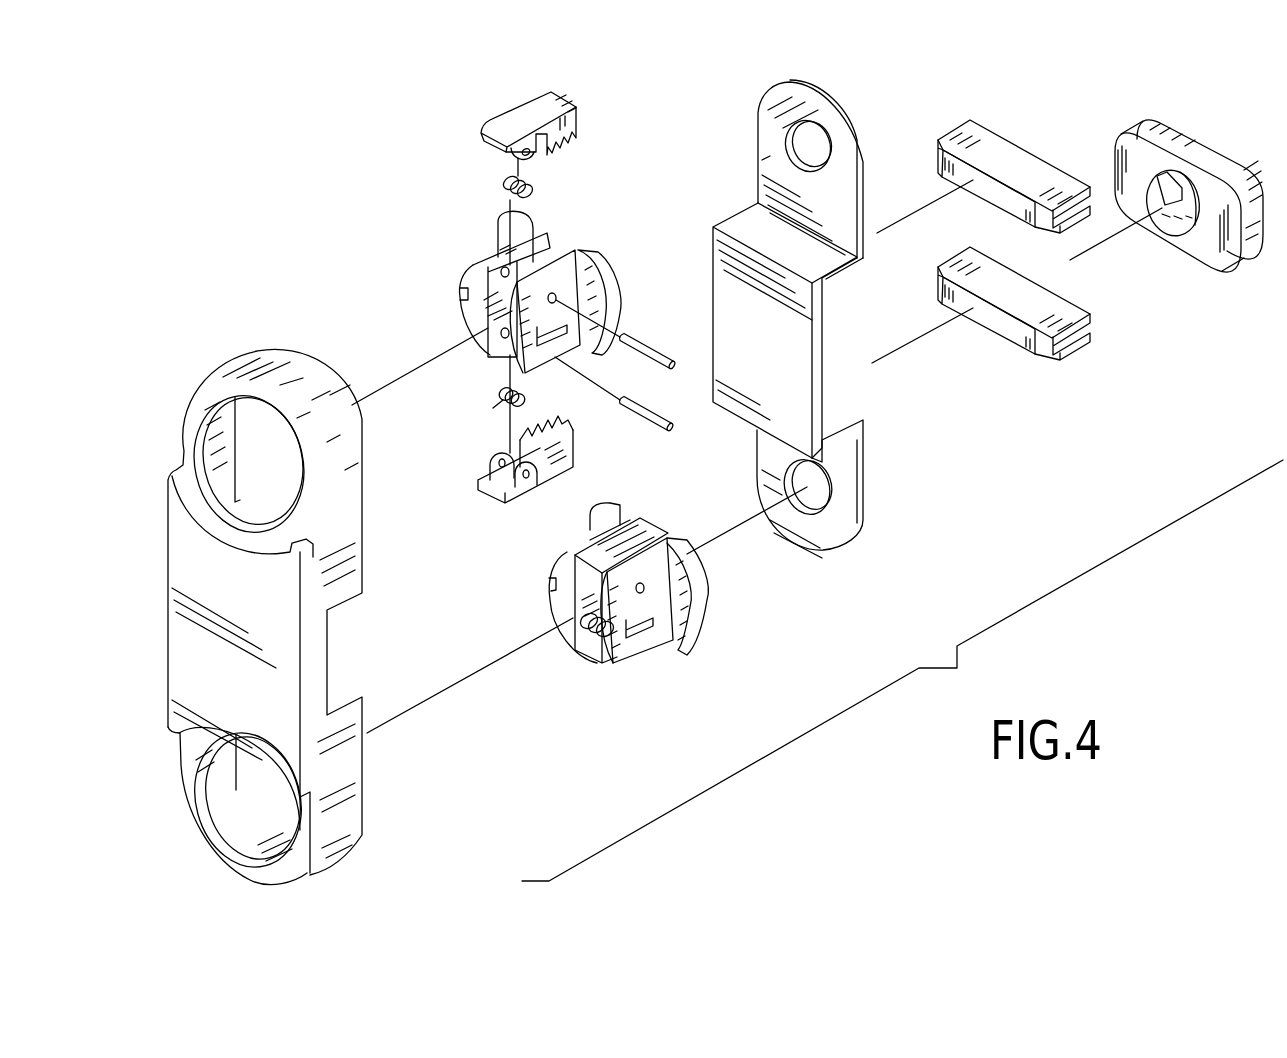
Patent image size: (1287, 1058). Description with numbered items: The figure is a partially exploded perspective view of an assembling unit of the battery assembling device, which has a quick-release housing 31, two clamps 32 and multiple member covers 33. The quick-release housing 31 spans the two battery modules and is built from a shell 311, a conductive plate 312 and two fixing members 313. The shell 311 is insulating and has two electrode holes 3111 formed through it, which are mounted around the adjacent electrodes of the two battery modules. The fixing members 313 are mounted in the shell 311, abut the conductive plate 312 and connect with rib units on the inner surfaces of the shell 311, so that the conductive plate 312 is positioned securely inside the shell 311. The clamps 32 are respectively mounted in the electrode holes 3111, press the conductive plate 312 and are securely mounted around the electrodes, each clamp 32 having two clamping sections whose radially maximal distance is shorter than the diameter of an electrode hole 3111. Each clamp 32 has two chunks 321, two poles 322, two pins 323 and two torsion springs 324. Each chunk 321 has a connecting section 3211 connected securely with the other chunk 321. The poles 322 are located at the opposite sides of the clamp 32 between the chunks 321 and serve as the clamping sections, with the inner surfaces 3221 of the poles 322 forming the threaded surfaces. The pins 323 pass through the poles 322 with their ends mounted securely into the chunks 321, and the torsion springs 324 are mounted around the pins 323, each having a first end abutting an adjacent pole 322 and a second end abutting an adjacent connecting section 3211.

The quick-release housing 31 is at (290, 616).
The shell 311 is at (175, 768).
The electrode holes 3111 is at (288, 482).
The conductive plate 312 is at (882, 474).
The fixing members 313 is at (953, 137).
The clamps 32 is at (525, 377).
The chunks 321 is at (453, 322).
The connecting section 3211 is at (550, 252).
The poles 322 is at (472, 436).
The inner surfaces 3221 is at (548, 448).
The pins 323 is at (641, 417).
The torsion springs 324 is at (499, 397).
The member covers 33 is at (1097, 145).